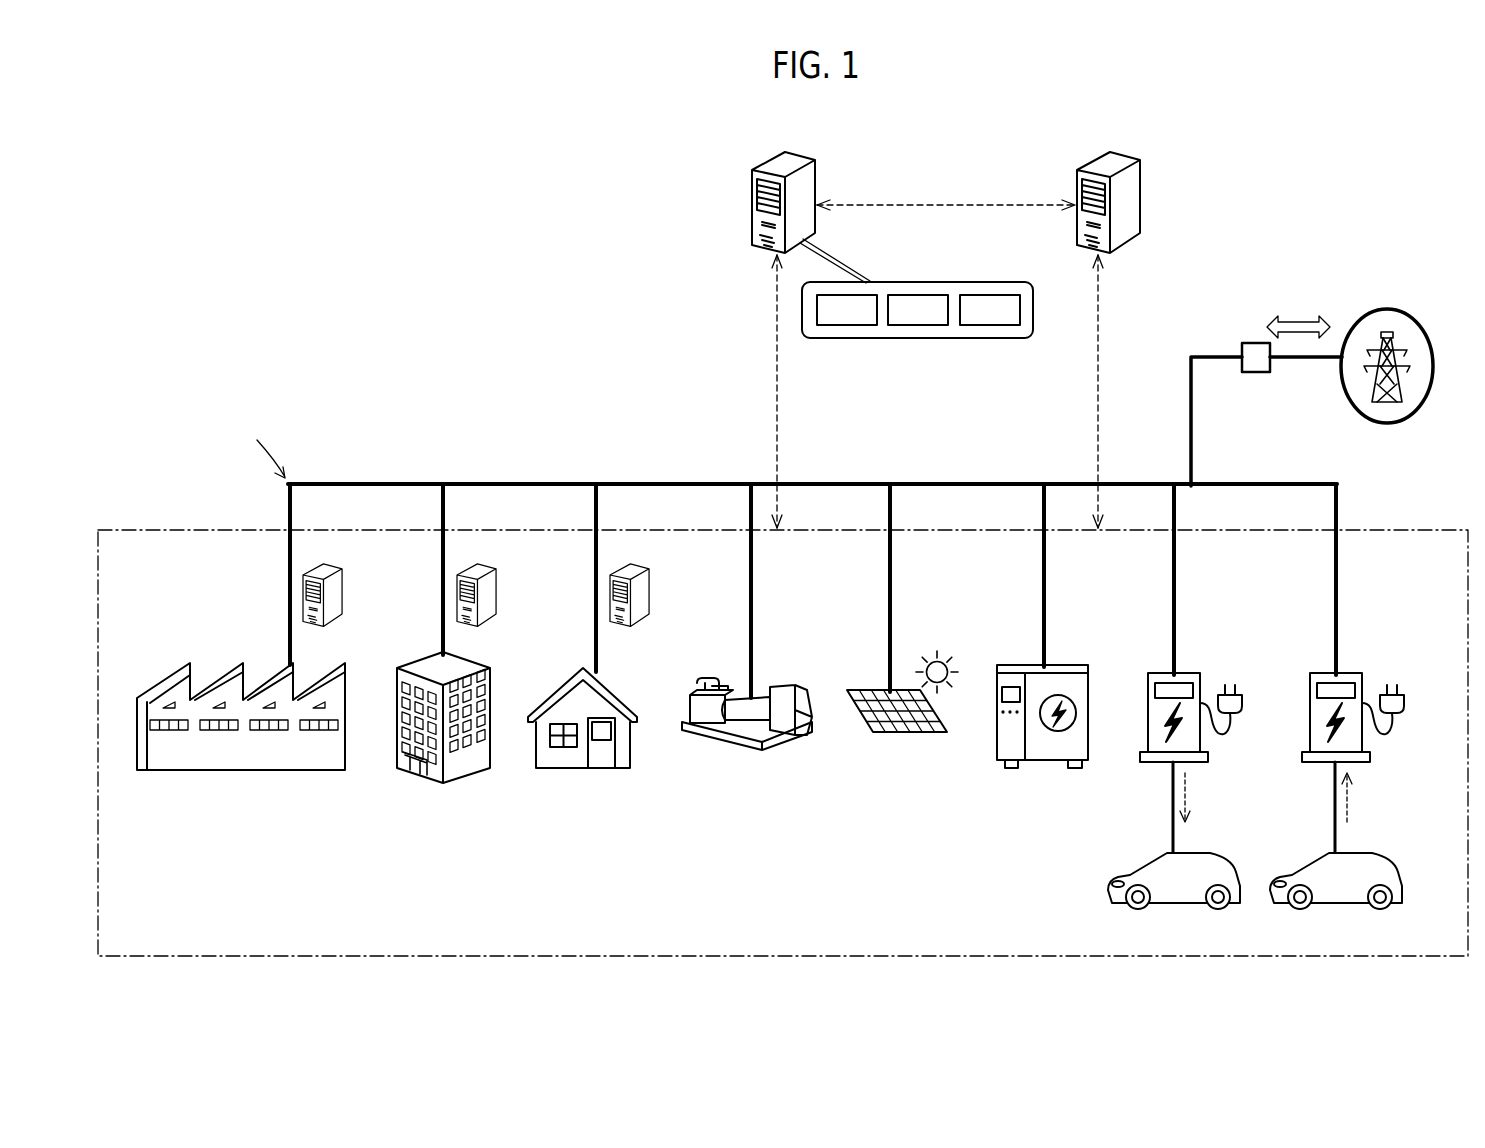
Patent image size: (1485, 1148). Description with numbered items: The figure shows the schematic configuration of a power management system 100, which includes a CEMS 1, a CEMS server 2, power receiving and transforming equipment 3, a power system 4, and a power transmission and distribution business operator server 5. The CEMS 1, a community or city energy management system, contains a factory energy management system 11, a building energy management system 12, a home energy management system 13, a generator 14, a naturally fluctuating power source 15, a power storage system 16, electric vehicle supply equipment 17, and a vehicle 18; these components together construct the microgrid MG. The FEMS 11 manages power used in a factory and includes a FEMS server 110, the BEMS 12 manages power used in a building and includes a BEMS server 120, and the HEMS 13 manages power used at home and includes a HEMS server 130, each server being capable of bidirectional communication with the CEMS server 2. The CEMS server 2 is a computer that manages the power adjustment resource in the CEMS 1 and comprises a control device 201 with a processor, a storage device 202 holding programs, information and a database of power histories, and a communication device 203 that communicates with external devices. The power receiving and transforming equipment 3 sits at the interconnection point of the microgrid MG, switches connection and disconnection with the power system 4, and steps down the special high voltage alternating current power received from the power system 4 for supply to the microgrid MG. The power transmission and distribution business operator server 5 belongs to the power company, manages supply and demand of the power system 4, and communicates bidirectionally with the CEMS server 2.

The power management system 100 is at (195, 143).
The CEMS 1 is at (193, 527).
The CEMS server 2 is at (800, 153).
The power receiving and transforming equipment 3 is at (1270, 369).
The power system 4 is at (1401, 312).
The power transmission and distribution business operator server 5 is at (1122, 153).
The factory energy management system 11 is at (181, 663).
The building energy management system 12 is at (466, 661).
The home energy management system 13 is at (617, 690).
The generator 14 is at (786, 684).
The naturally fluctuating power source 15 is at (864, 688).
The power storage system 16 is at (1069, 663).
The electric vehicle supply equipment 17 is at (1192, 670).
The vehicle 18 is at (1191, 851).
The FEMS server 110 is at (334, 566).
The BEMS server 120 is at (486, 566).
The HEMS server 130 is at (638, 566).
The control device 201 is at (847, 326).
The storage device 202 is at (918, 326).
The communication device 203 is at (990, 326).